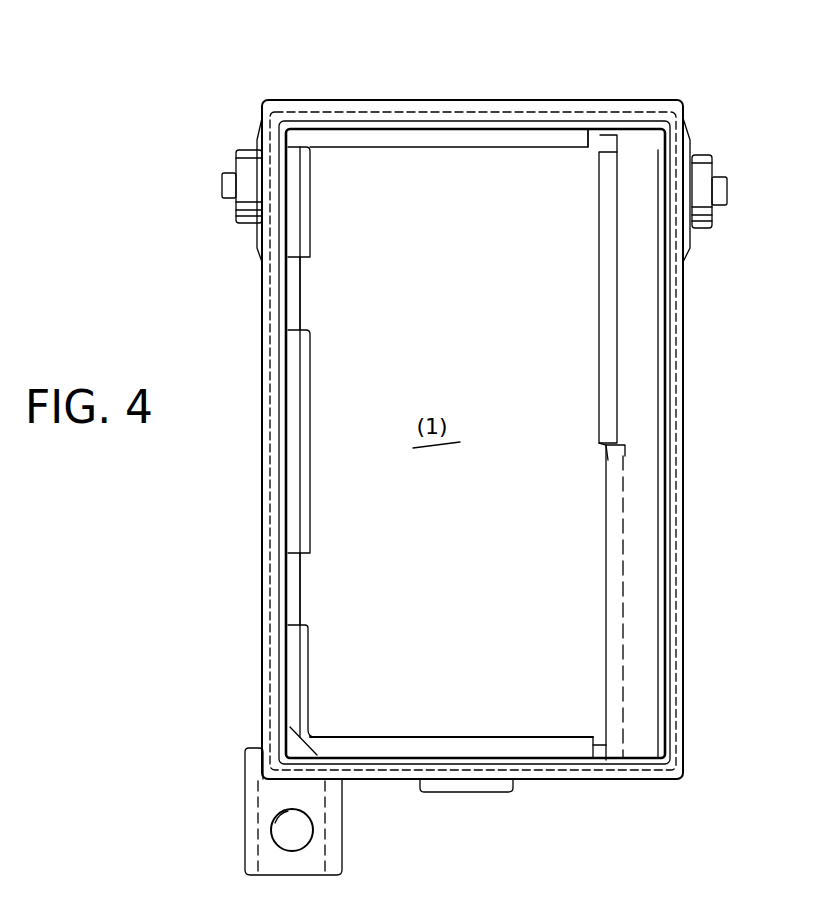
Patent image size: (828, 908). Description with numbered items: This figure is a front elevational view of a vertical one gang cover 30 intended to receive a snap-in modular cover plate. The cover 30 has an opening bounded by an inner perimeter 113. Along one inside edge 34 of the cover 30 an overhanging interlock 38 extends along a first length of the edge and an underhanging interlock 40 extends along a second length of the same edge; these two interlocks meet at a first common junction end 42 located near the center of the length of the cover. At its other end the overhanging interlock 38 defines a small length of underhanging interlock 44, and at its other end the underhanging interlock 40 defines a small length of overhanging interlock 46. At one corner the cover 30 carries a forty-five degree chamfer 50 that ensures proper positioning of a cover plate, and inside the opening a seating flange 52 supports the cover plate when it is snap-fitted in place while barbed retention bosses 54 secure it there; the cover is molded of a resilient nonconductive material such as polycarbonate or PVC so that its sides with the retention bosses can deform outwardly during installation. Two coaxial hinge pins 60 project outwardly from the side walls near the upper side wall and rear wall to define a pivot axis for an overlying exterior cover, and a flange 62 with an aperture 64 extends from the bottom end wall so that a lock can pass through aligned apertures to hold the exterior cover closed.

The vertical cover 30 is at (551, 86).
The inside edge 34 is at (582, 380).
The overhanging interlock 38 is at (598, 292).
The underhanging interlock 40 is at (603, 592).
The first common junction end 42 is at (608, 463).
The small length of underhanging interlock 44 is at (617, 137).
The small length of overhanging interlock 46 is at (592, 747).
The 45° chamfer 50 is at (290, 727).
The seating flange 52 is at (317, 215).
The barbed retention bosses 54 is at (300, 295).
The hinge pins 60 is at (238, 226).
The flange 62 is at (342, 822).
The aperture 64 is at (278, 815).
The inner perimeter 113 is at (380, 334).